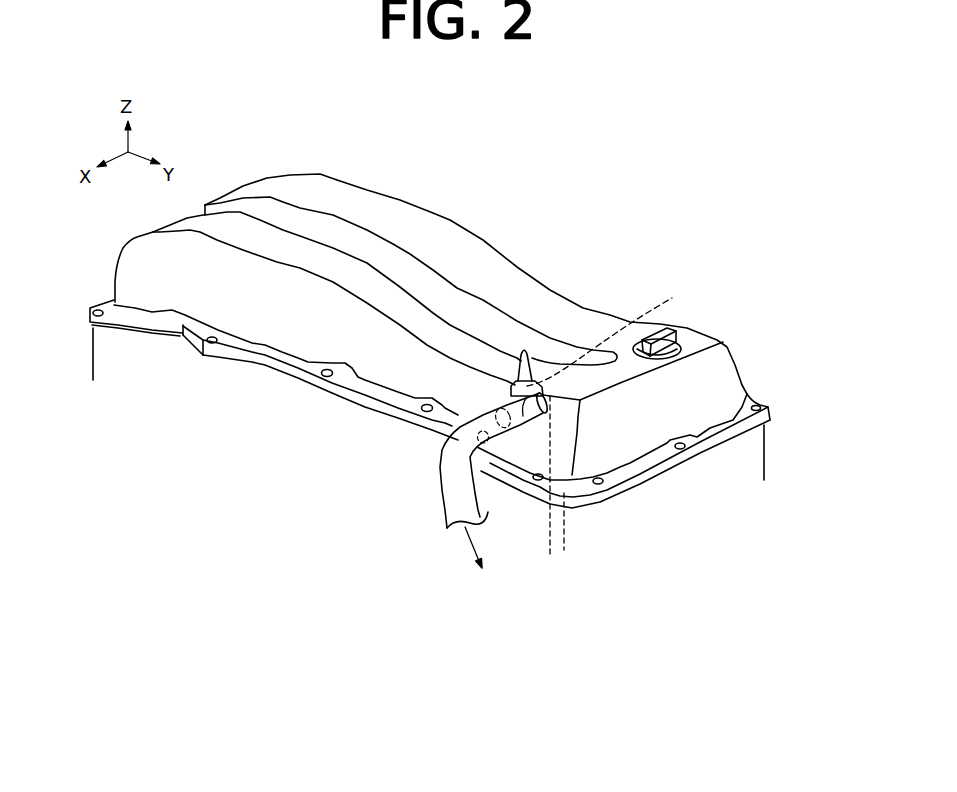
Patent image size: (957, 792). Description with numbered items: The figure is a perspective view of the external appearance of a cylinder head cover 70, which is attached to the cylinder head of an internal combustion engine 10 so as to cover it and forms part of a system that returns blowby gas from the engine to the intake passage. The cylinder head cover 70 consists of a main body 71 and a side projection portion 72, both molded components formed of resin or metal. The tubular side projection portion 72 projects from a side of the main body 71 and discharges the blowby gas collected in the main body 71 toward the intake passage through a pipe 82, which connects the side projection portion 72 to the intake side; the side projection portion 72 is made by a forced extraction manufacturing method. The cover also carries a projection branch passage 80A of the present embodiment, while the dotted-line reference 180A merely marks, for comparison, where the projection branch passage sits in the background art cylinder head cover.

The internal combustion engine 10 is at (776, 438).
The cylinder head cover 70 is at (306, 157).
The main body 71 is at (508, 279).
The side projection portion 72 is at (551, 493).
The projection branch passage 80A is at (532, 368).
The projection branch passage of background art cylinder head cover 180A is at (635, 337).
The pipe 82 is at (440, 462).